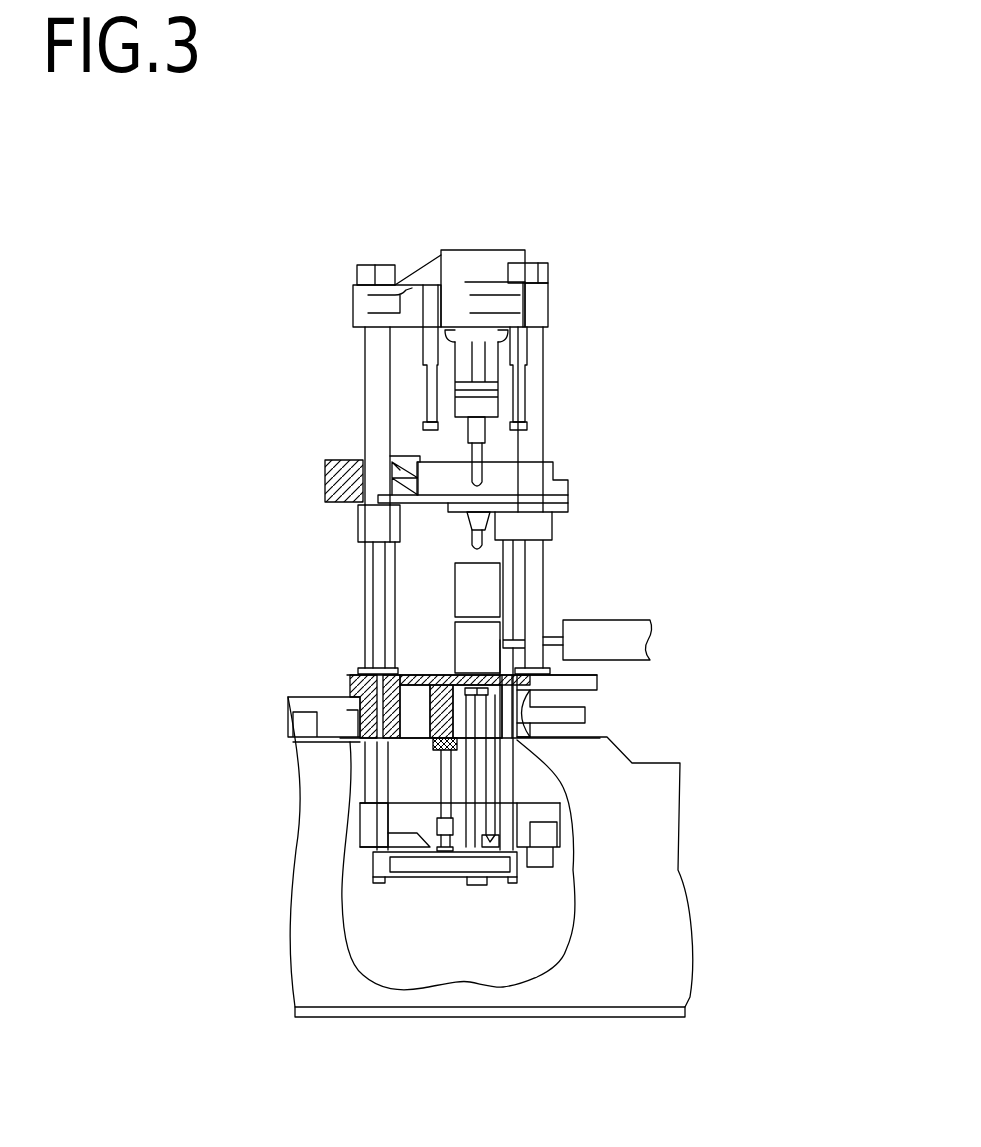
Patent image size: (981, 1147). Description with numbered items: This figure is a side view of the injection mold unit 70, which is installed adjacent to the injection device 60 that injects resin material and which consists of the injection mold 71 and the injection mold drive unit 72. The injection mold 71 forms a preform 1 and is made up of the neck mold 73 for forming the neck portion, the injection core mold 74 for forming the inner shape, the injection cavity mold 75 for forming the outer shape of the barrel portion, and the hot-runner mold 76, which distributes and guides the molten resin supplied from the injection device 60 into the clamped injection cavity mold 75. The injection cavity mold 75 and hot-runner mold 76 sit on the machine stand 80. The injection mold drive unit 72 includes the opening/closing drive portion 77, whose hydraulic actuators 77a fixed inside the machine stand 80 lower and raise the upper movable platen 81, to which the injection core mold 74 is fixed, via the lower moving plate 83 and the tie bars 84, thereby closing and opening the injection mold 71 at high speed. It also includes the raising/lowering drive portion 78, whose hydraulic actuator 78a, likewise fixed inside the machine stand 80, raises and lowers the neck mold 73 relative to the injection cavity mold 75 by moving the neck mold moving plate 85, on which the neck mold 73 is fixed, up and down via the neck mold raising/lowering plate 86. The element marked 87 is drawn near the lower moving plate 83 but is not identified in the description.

The injection mold unit 70 is at (659, 232).
The upper movable platen 81 is at (548, 296).
The injection core mold 74 is at (482, 468).
The neck mold moving plate 85 is at (568, 500).
The neck mold 73 is at (490, 515).
The preform 1 is at (484, 547).
The injection mold 71 is at (398, 570).
The injection cavity mold 75 is at (477, 592).
The hot-runner mold 76 is at (473, 650).
The injection device 60 is at (602, 627).
The machine stand 80 is at (587, 680).
The tie bars 84 is at (538, 777).
The injection mold drive unit 72 is at (527, 928).
The raising/lowering drive portion 78 is at (440, 797).
The actuator 78a is at (445, 834).
The opening/closing drive portion 77 is at (488, 795).
The actuators 77a is at (490, 841).
The lower moving plate 83 is at (540, 827).
The side block 87 is at (383, 823).
The neck mold raising/lowering plate 86 is at (405, 878).